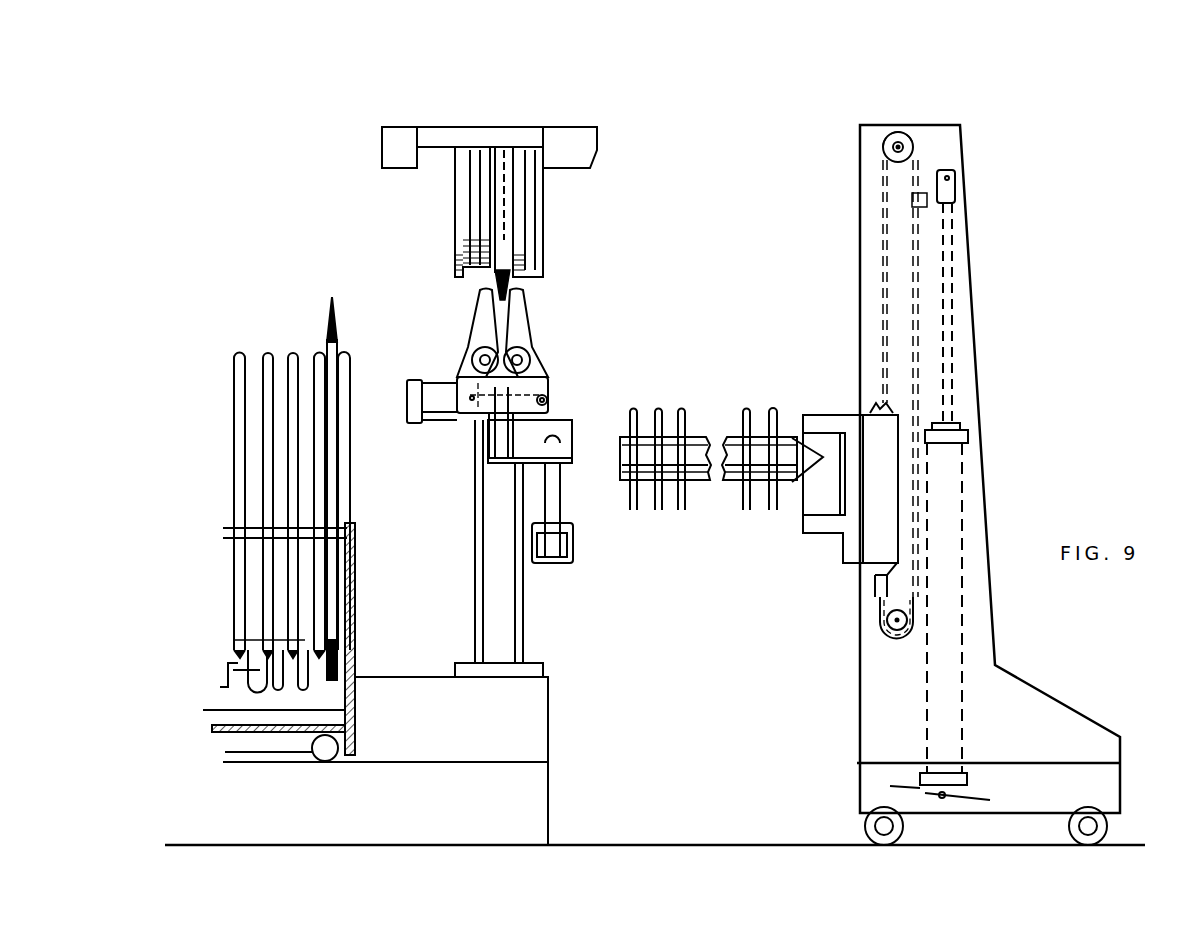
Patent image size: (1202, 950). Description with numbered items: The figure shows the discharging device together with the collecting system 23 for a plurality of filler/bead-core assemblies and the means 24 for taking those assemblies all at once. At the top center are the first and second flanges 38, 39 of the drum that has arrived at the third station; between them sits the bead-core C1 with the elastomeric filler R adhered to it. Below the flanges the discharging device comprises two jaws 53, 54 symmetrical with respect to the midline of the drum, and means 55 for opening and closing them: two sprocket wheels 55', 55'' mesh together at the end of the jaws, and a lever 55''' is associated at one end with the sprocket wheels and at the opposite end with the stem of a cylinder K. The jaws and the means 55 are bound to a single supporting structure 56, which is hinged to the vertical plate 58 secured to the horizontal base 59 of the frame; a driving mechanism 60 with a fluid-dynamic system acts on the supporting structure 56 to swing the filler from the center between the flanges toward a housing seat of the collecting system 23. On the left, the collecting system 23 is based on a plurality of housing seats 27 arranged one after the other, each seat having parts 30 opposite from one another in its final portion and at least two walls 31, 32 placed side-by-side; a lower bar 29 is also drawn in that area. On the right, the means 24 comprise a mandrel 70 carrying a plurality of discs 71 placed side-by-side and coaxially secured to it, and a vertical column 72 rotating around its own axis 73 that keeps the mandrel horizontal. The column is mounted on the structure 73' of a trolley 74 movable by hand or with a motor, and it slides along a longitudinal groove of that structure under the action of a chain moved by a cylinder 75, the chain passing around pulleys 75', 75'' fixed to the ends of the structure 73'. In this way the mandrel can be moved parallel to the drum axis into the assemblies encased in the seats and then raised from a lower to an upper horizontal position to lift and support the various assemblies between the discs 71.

The collecting system 23 is at (223, 465).
The means for contemporaneously taking a plurality of assemblies 24 is at (760, 378).
The housing seats 27 is at (250, 350).
The support bar 29 is at (233, 640).
The parts 30 is at (250, 669).
The wall 31 is at (237, 613).
The wall 32 is at (262, 582).
The first flange 38 is at (530, 217).
The second flange 39 is at (470, 217).
The bead-core C1 is at (505, 258).
The elastomeric filler R is at (510, 283).
The jaw 53 is at (485, 303).
The jaw 54 is at (520, 305).
The means for opening and closing the jaws 55 is at (464, 430).
The sprocket wheel 55' is at (450, 358).
The sprocket wheel 55'' is at (553, 357).
The lever 55''' is at (580, 392).
The cylinder K is at (417, 412).
The supporting structure 56 is at (487, 467).
The vertical plate 58 is at (480, 570).
The horizontal base 59 is at (392, 685).
The driving mechanism 60 is at (560, 562).
The mandrel 70 is at (697, 443).
The discs 71 is at (680, 510).
The vertical column 72 is at (810, 495).
The axis 73 is at (847, 481).
The structure 73' is at (964, 469).
The trolley 74 is at (872, 790).
The cylinder 75 is at (982, 484).
The pulley 75' is at (856, 364).
The pulley 75'' is at (856, 621).